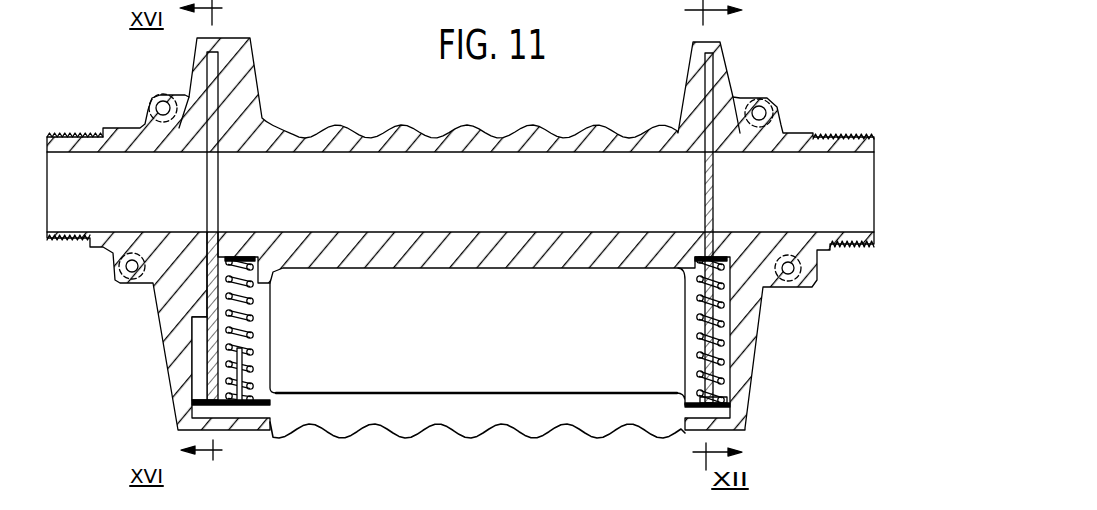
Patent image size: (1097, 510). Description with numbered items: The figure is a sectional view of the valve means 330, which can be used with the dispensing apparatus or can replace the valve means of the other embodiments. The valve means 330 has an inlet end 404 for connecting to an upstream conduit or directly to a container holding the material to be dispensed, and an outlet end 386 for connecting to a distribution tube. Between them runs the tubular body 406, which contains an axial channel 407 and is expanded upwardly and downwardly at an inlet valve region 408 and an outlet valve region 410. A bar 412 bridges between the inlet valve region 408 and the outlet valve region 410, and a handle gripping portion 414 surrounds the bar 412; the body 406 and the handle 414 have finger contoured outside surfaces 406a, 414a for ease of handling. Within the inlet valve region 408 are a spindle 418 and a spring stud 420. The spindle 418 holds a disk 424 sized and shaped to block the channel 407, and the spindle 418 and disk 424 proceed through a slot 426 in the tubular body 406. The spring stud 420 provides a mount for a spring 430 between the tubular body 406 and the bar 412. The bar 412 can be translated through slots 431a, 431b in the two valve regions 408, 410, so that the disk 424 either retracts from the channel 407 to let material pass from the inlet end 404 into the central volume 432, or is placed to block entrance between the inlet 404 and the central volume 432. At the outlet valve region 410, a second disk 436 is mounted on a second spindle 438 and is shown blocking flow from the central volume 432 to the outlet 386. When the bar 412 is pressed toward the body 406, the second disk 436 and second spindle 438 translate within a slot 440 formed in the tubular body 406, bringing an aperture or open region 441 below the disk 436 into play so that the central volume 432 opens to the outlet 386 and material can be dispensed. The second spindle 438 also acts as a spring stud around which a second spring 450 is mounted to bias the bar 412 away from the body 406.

The valve means 330 is at (535, 121).
The outlet end 386 is at (715, 202).
The inlet end 404 is at (74, 135).
The tubular body 406 is at (453, 133).
The finger contoured outside surface 406a is at (302, 127).
The axial channel 407 is at (357, 156).
The inlet valve region 408 is at (255, 84).
The outlet valve region 410 is at (716, 54).
The bar 412 is at (272, 390).
The handle gripping portion 414 is at (523, 413).
The finger contoured outside surface 414a is at (380, 428).
The spindle 418 is at (213, 358).
The spring stud 420 is at (245, 347).
The disk 424 is at (207, 287).
The slot 426 is at (208, 80).
The spring 430 is at (245, 367).
The slot 431a is at (270, 321).
The slot 431b is at (690, 323).
The central volume 432 is at (577, 172).
The second disk 436 is at (833, 148).
The second spindle 438 is at (713, 336).
The slot 440 is at (710, 93).
The open region 441 is at (720, 284).
The second spring 450 is at (733, 381).